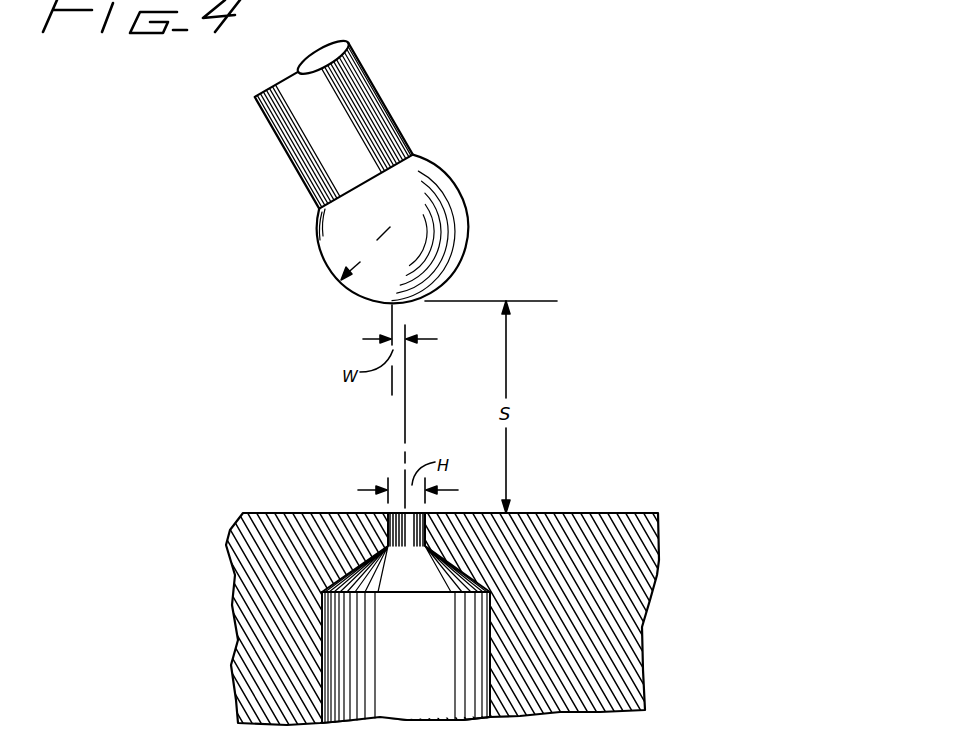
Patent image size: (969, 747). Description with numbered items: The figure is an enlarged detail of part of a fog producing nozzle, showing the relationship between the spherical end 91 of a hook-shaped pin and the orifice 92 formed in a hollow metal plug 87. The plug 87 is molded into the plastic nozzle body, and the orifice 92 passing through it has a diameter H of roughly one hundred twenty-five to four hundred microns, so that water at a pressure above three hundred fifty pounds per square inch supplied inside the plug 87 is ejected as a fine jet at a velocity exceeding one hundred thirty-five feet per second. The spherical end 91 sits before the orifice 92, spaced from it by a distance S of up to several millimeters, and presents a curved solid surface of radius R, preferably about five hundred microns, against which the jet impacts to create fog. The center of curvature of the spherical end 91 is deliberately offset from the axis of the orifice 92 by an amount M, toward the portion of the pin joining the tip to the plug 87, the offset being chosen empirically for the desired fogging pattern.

The spherical end 91 is at (441, 289).
The hollow metal plug 87 is at (568, 513).
The orifice 92 is at (402, 525).